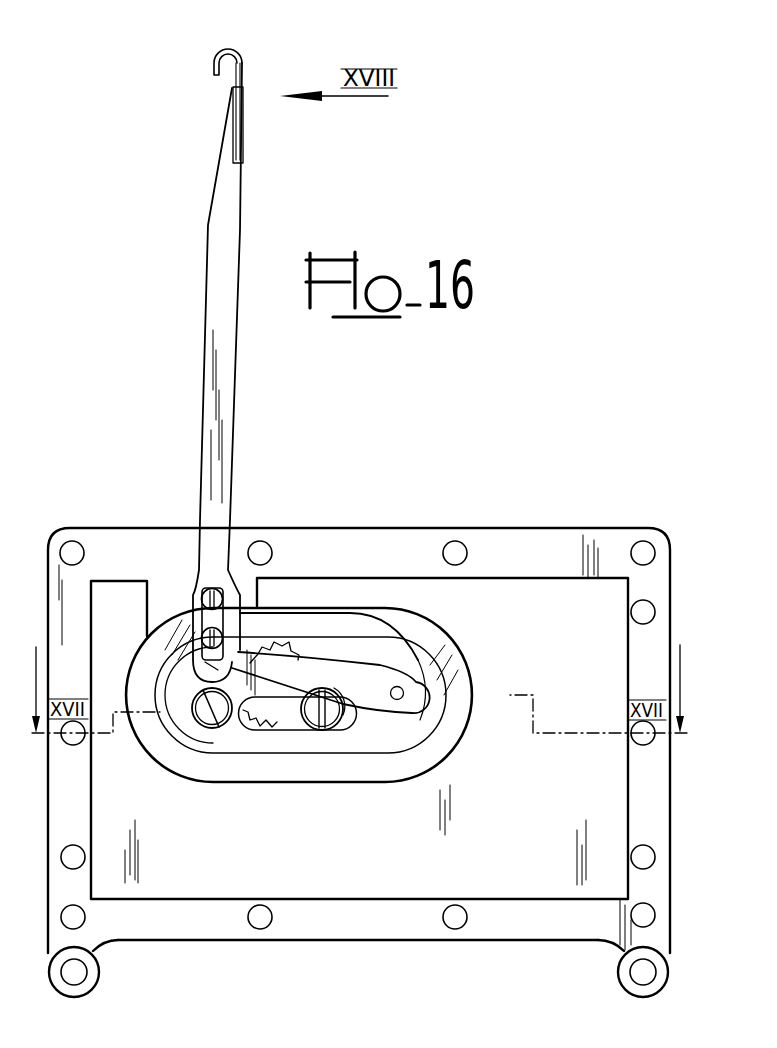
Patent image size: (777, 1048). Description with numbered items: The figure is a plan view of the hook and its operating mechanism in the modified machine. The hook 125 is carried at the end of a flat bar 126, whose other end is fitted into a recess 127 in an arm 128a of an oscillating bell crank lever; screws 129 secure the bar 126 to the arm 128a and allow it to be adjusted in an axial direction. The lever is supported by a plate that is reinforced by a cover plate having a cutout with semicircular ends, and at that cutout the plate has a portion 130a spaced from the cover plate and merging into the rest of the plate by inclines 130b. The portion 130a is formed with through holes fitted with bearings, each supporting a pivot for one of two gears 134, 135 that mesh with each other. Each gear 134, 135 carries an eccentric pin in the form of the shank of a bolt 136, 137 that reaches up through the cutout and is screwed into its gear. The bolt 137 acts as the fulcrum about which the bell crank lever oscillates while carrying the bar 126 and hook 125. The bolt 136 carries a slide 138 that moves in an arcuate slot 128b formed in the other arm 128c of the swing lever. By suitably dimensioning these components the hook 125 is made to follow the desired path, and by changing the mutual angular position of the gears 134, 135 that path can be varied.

The hook 125 is at (243, 62).
The flat bar 126 is at (230, 222).
The recess 127 is at (212, 668).
The arm of bell crank lever 128a is at (193, 618).
The arcuate slot 128b is at (402, 694).
The arm of swing lever 128c is at (403, 677).
The screws 129 is at (215, 593).
The portion of plate 130a is at (270, 647).
The inclines 130b is at (377, 643).
The gear 134 is at (453, 714).
The gear 135 is at (173, 660).
The bolt 136 is at (341, 707).
The bolt 137 is at (203, 718).
The slide 138 is at (313, 731).